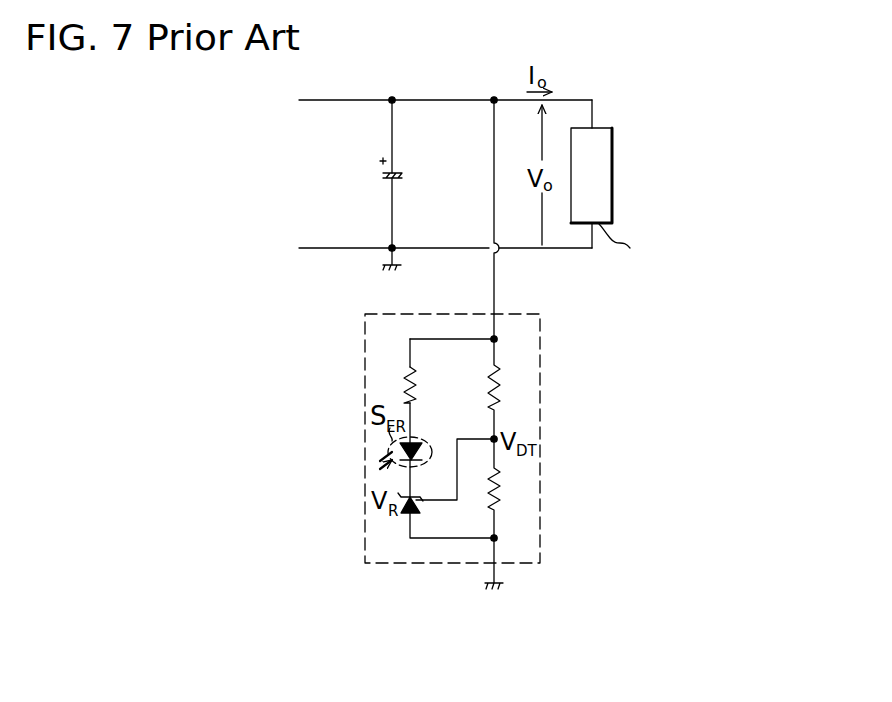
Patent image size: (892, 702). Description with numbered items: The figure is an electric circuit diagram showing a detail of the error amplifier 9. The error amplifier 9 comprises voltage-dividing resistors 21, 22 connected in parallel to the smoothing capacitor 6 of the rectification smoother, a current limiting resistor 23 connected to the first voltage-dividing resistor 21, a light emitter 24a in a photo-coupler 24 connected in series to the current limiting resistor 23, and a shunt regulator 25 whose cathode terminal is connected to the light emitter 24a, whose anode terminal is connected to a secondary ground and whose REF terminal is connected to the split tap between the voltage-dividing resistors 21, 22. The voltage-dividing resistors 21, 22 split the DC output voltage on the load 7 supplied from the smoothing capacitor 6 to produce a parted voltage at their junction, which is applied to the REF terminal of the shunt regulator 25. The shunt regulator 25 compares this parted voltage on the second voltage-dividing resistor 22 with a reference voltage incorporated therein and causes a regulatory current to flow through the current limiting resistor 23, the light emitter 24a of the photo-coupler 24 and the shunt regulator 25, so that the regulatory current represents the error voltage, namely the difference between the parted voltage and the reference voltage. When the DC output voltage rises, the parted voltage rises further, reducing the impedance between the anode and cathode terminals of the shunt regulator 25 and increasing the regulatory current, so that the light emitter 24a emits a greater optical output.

The smoothing capacitor 6 is at (404, 176).
The load 7 is at (594, 127).
The error amplifier 9 is at (544, 438).
The first voltage-dividing resistor 21 is at (497, 390).
The second voltage-dividing resistor 22 is at (498, 489).
The current limiting resistor 23 is at (406, 383).
The photo-coupler 24 is at (430, 396).
The light emitter 24a is at (422, 440).
The shunt regulator 25 is at (420, 504).